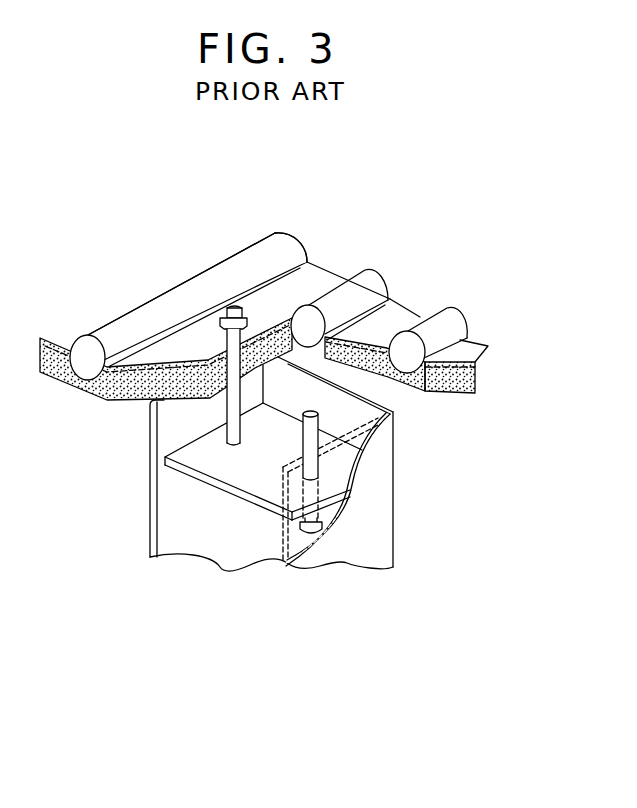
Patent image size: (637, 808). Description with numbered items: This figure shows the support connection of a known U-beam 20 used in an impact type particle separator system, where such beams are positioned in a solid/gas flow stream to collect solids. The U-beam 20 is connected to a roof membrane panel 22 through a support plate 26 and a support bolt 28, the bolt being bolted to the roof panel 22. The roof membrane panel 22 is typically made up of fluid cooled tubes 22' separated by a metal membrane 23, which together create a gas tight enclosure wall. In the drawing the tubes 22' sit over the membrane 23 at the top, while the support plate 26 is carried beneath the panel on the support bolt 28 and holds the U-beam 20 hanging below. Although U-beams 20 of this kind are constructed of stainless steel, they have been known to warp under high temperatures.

The U-beam 20 is at (380, 472).
The roof membrane panel 22 is at (237, 299).
The fluid cooled tubes 22' is at (465, 333).
The metal membrane 23 is at (398, 315).
The support plate 26 is at (186, 474).
The support bolt 28 is at (321, 541).